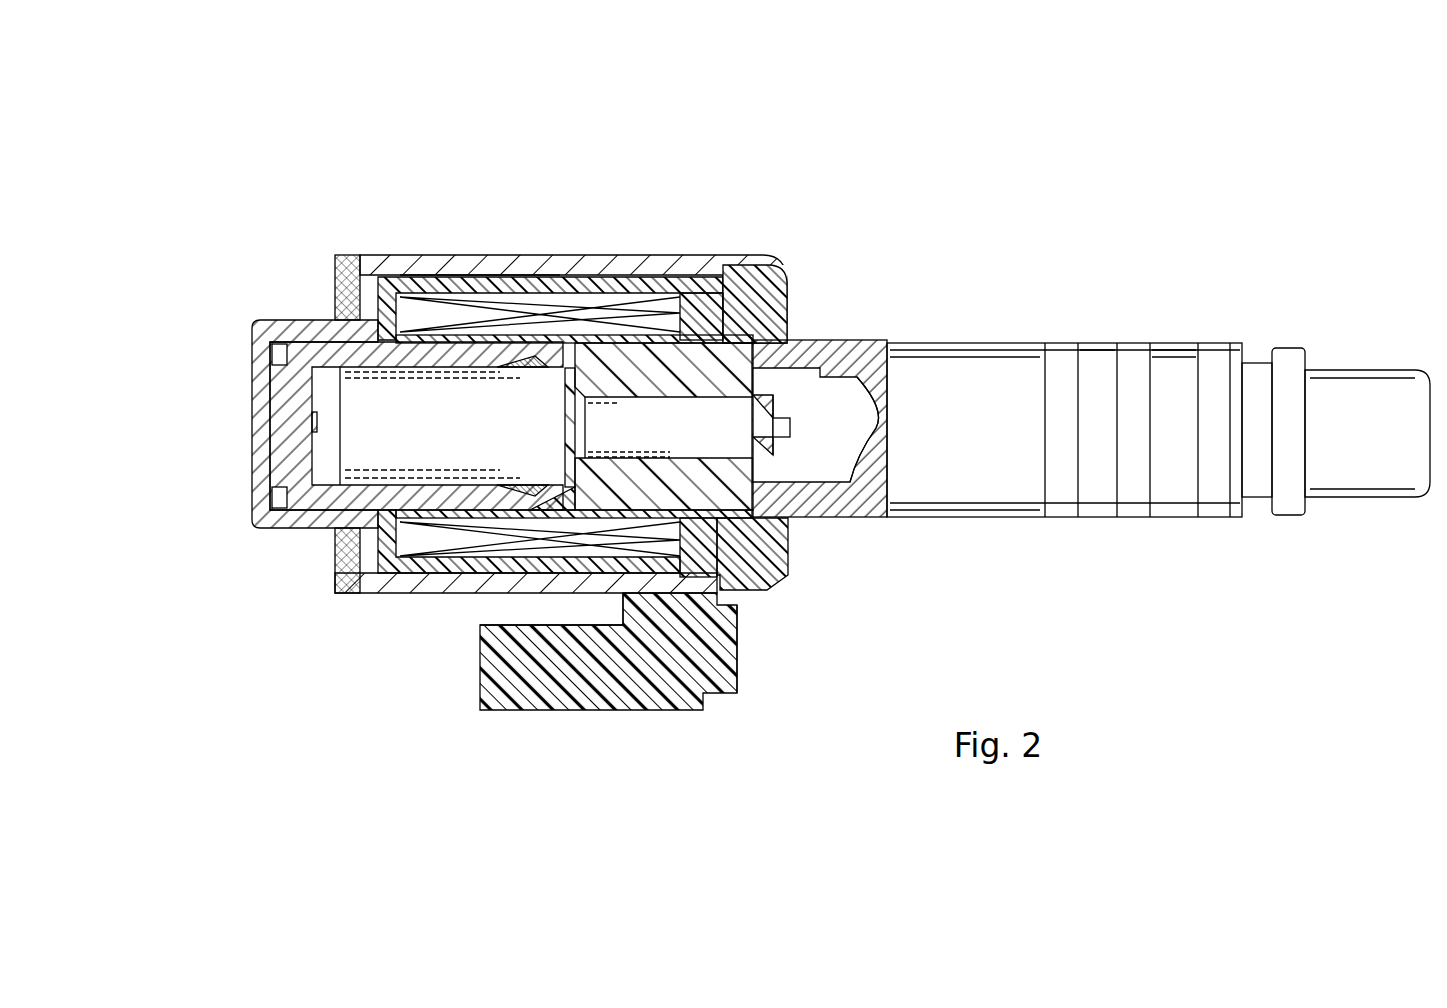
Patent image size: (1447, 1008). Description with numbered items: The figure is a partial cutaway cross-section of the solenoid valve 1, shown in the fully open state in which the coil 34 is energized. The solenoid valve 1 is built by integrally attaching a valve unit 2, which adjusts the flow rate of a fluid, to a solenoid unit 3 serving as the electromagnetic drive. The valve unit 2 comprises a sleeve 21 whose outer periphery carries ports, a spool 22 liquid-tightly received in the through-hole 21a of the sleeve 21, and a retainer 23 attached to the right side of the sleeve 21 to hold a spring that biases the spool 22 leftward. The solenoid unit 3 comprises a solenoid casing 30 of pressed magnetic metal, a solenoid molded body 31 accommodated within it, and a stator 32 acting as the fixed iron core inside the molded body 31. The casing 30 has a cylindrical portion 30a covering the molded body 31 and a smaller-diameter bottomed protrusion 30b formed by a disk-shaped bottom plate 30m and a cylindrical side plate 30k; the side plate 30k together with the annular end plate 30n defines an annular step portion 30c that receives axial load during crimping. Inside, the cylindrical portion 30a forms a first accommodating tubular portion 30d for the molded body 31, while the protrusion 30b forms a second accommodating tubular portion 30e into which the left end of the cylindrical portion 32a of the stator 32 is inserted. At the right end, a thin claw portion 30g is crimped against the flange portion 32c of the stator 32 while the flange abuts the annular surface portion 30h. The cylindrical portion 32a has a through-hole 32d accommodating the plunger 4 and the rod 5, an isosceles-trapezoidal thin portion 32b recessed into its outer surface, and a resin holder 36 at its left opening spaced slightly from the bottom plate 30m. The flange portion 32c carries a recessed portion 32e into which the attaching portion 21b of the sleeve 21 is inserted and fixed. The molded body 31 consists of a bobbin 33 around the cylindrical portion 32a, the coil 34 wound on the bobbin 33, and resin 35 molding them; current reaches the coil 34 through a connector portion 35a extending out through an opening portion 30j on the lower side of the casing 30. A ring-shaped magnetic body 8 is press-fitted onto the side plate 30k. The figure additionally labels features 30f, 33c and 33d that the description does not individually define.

The solenoid valve 1 is at (1052, 190).
The valve unit 2 is at (1062, 326).
The solenoid unit 3 is at (301, 186).
The plunger 4 is at (365, 410).
The rod 5 is at (712, 440).
The magnetic body 8 is at (333, 265).
The sleeve 21 is at (882, 336).
The through-hole 21a is at (850, 378).
The attaching portion 21b is at (800, 527).
The spool 22 is at (913, 520).
The retainer 23 is at (1356, 392).
The solenoid casing 30 is at (445, 248).
The cylindrical portion 30a is at (575, 290).
The protrusion 30b is at (162, 603).
The annular step portion 30c is at (165, 716).
The first accommodating tubular portion 30d is at (470, 270).
The second accommodating tubular portion 30e is at (270, 355).
The housing flange 30f is at (395, 255).
The claw portion 30g is at (790, 262).
The annular surface portion 30h is at (728, 260).
The opening portion 30j is at (637, 603).
The side plate 30k is at (297, 550).
The bottom plate 30m is at (305, 528).
The end plate 30n is at (347, 598).
The solenoid molded body 31 is at (742, 672).
The stator 32 is at (800, 301).
The cylindrical portion 32a is at (293, 485).
The thin portion 32b is at (527, 500).
The flange portion 32c is at (738, 300).
The through-hole 32d is at (420, 472).
The recessed portion 32e is at (776, 585).
The bobbin 33 is at (325, 330).
The rear body corner 33c is at (340, 322).
The spring 33d is at (518, 372).
The coil 34 is at (613, 287).
The resin 35 is at (692, 300).
The connector portion 35a is at (553, 665).
The holder 36 is at (305, 430).